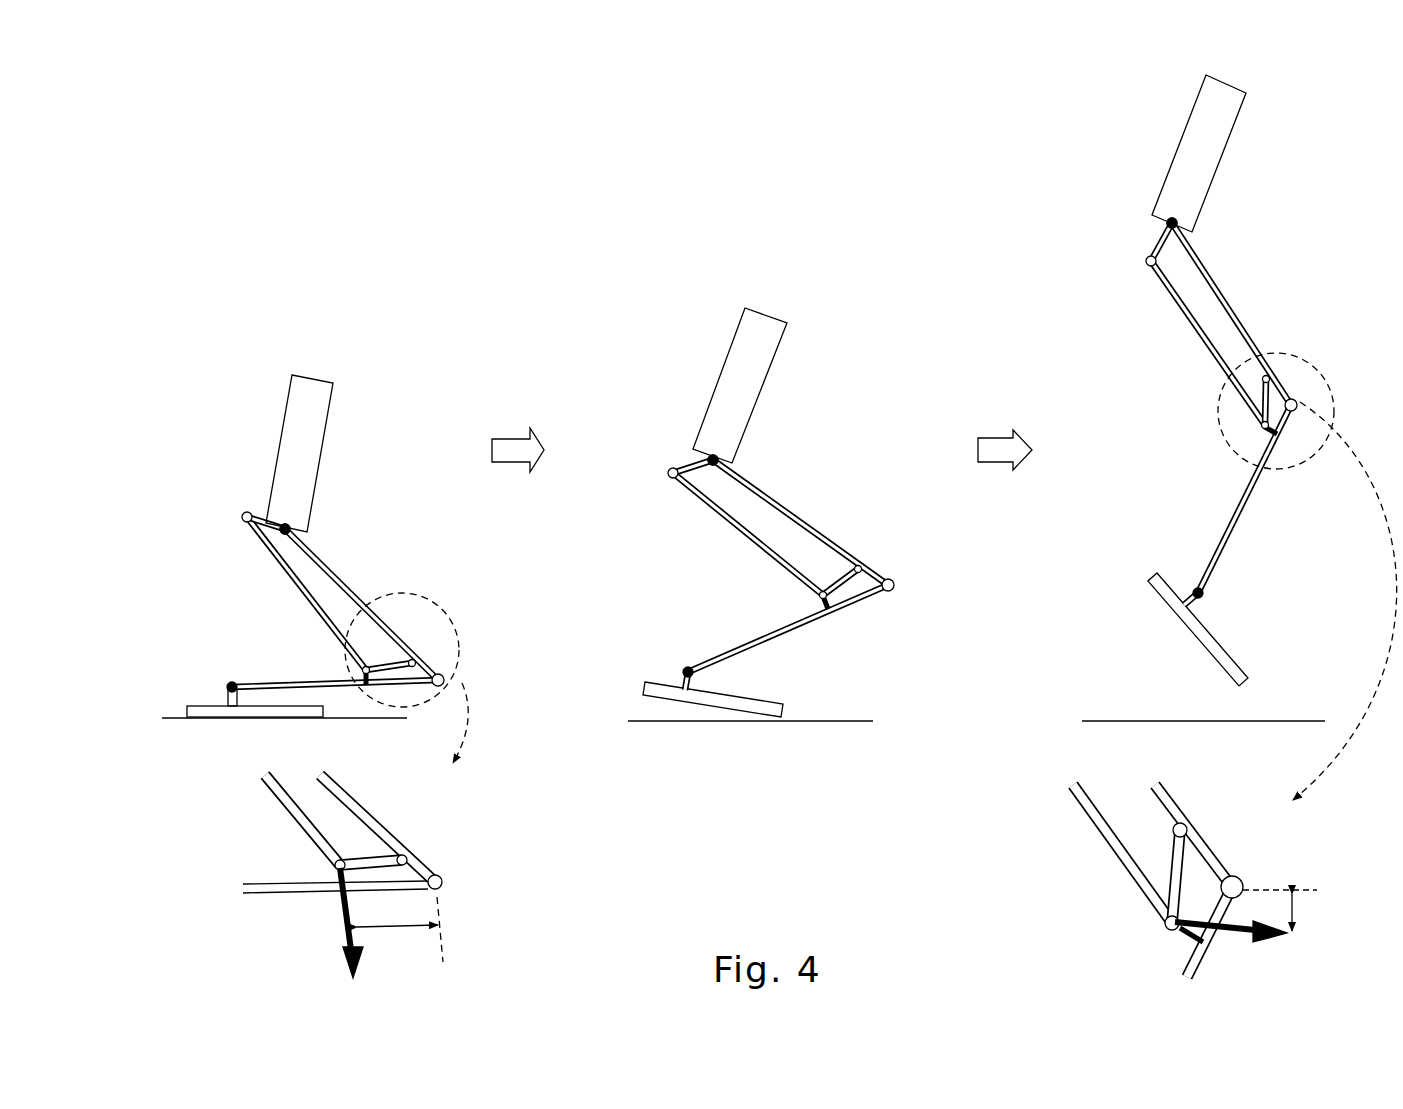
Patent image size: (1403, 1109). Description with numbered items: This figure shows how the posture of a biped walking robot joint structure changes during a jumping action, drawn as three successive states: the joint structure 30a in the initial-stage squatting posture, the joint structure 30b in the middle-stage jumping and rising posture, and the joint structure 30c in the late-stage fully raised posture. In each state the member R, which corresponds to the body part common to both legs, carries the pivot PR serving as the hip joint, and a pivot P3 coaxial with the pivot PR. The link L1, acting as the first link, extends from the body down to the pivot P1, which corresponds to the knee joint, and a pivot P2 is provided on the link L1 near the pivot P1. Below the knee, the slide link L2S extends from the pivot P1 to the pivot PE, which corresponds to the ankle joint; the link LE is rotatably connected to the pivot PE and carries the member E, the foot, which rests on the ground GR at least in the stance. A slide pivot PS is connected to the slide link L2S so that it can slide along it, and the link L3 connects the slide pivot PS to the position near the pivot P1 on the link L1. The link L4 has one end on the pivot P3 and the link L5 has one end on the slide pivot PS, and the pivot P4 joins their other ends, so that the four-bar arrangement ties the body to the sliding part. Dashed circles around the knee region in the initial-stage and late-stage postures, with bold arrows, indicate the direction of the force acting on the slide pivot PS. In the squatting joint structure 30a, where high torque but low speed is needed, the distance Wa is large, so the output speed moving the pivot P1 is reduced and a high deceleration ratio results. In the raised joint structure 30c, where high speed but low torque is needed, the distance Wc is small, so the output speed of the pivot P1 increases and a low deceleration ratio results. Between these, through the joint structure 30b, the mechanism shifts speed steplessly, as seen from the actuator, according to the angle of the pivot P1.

The joint structure in initial-stage posture 30a is at (236, 307).
The joint structure in middle-stage posture 30b is at (631, 316).
The joint structure in late-stage posture 30c is at (1068, 130).
The member R is at (323, 412).
The pivot PR is at (283, 527).
The pivot P3 is at (728, 376).
The pivot P4 is at (245, 515).
The pivot P1 is at (442, 678).
The pivot P2 is at (413, 663).
The slide pivot PS is at (363, 668).
The pivot PE is at (230, 685).
The link L1 is at (352, 592).
The slide link L2S is at (287, 685).
The link L3 is at (395, 660).
The link L4 is at (257, 525).
The link L5 is at (297, 589).
The link LE is at (217, 700).
The member E is at (240, 712).
The ground GR is at (350, 719).
The distance Wa is at (391, 923).
The distance Wc is at (1257, 916).